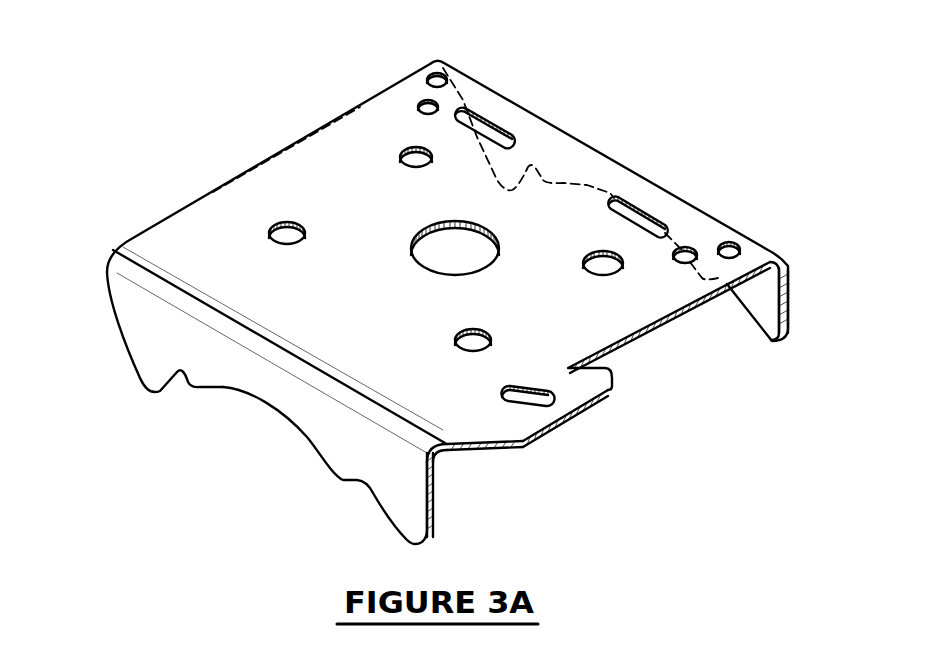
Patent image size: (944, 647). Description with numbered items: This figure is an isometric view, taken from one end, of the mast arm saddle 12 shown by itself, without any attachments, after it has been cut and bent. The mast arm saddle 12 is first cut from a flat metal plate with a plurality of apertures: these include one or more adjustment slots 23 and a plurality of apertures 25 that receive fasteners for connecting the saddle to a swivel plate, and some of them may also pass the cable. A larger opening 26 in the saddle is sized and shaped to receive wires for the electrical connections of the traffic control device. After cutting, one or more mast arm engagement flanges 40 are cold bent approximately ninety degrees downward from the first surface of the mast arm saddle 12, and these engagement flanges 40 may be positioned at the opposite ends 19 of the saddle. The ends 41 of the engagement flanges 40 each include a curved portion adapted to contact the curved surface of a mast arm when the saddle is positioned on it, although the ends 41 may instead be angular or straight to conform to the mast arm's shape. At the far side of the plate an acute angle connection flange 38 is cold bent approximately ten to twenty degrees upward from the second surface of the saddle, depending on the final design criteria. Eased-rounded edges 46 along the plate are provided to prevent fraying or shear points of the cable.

The mast arm saddle 12 is at (238, 477).
The opposite ends of the saddle 19 is at (438, 60).
The adjustment slots 23 is at (493, 122).
The apertures 25 is at (287, 233).
The opening 26 is at (455, 248).
The acute angle connection flange 38 is at (585, 407).
The mast arm engagement flanges 40 is at (237, 392).
The ends of the engagement flanges 41 is at (332, 460).
The eased-rounded edges 46 is at (293, 140).